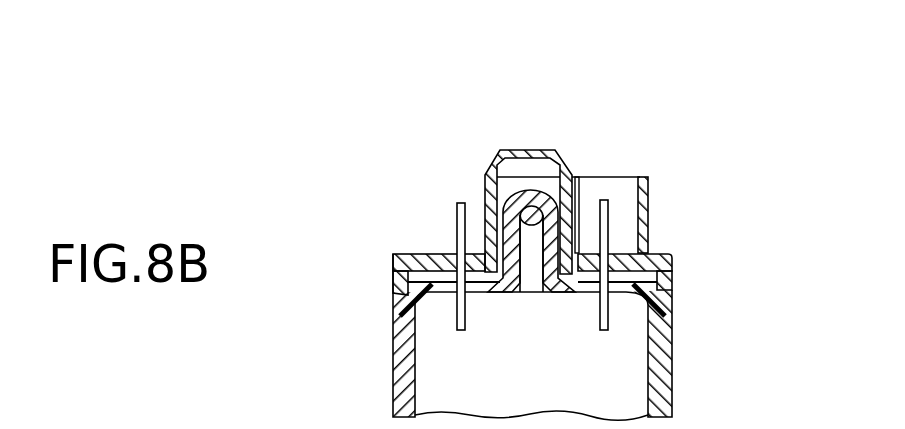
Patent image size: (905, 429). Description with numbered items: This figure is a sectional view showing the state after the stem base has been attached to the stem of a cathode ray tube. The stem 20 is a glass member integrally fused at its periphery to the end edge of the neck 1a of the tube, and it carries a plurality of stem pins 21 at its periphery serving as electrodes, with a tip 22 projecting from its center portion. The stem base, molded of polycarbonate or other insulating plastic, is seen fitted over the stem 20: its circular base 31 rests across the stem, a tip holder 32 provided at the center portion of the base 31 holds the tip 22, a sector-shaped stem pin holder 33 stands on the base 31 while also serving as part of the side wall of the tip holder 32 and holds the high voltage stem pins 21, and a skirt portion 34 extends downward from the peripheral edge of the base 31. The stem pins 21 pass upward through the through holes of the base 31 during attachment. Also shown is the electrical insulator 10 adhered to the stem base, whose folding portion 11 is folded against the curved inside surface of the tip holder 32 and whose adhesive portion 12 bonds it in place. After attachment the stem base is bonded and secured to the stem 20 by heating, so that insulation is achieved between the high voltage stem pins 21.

The neck 1a is at (658, 397).
The electrical insulator 10 is at (672, 263).
The folding portion 11 is at (578, 200).
The adhesive portion 12 is at (650, 252).
The stem 20 is at (529, 180).
The stem pins 21 is at (605, 200).
The tip 22 is at (490, 198).
The base 31 is at (418, 255).
The tip holder 32 is at (508, 148).
The stem pin holder 33 is at (647, 193).
The skirt portion 34 is at (392, 275).